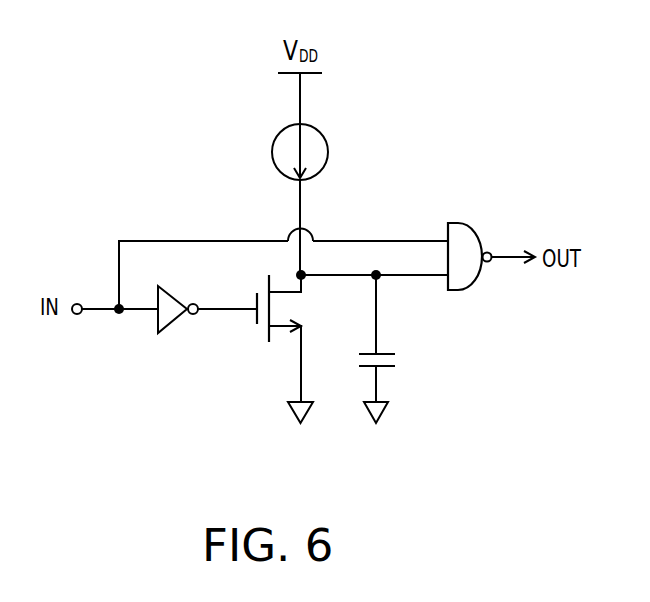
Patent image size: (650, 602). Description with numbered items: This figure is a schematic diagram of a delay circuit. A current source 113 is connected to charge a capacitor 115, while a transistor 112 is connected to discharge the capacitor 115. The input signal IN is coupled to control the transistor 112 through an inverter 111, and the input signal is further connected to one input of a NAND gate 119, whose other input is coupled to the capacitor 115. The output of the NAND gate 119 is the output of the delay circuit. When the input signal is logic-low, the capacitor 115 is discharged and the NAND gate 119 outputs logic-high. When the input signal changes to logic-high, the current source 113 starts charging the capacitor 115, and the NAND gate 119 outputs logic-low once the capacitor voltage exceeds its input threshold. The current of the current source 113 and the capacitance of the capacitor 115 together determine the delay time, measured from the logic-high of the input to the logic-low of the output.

The inverter 111 is at (173, 320).
The transistor 112 is at (285, 342).
The current source 113 is at (328, 152).
The capacitor 115 is at (402, 360).
The NAND gate 119 is at (470, 270).